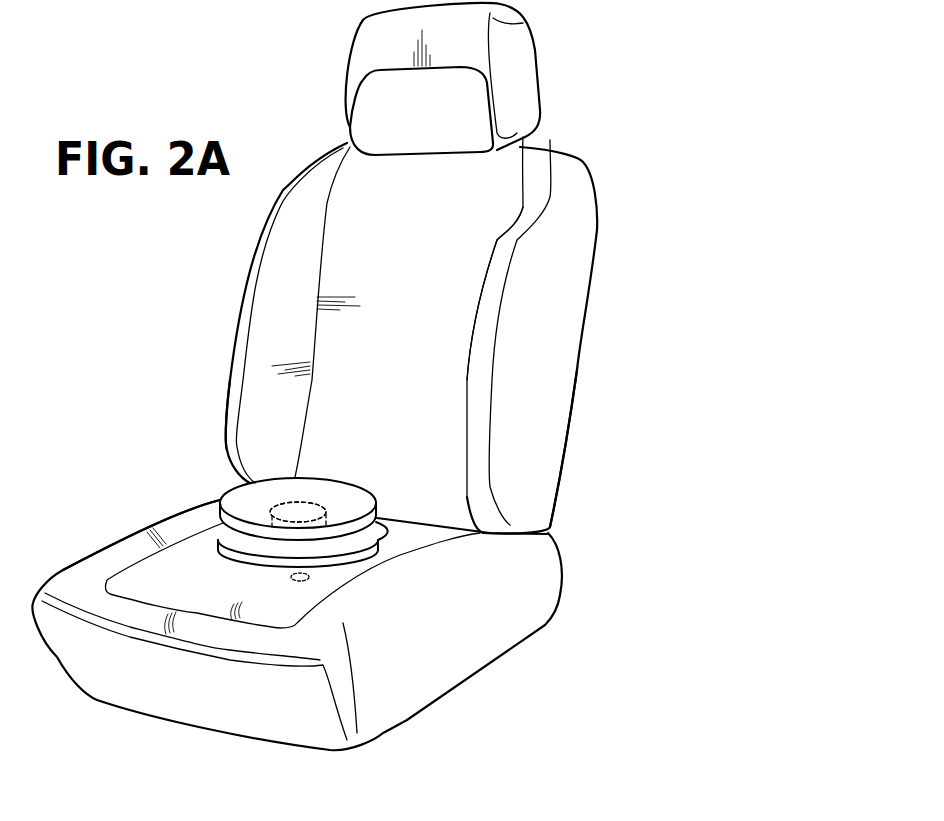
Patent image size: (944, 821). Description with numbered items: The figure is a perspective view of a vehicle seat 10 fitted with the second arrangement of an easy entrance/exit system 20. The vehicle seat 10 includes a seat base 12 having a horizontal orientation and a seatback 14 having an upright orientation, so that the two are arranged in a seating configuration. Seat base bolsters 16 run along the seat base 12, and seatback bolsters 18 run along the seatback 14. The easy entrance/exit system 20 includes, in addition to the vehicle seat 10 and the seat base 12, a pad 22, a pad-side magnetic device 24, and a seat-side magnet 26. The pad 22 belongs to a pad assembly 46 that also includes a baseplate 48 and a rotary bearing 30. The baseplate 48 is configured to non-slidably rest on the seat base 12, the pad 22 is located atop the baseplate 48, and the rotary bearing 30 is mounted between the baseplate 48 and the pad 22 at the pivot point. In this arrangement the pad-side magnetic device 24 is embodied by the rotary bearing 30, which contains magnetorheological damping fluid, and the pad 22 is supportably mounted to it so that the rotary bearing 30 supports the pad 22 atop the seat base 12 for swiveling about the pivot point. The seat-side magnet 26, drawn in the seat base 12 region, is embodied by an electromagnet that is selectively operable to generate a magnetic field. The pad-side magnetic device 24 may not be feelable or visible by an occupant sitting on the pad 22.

The vehicle seat 10 is at (583, 162).
The seat base 12 is at (407, 720).
The seatback 14 is at (572, 418).
The seat base bolsters 16 is at (453, 550).
The seatback bolsters 18 is at (513, 240).
The easy entrance/exit system 20 is at (188, 404).
The pad 22 is at (238, 508).
The pad-side magnetic device 24 is at (277, 503).
The seat-side magnet 26 is at (291, 578).
The rotary bearing 30 is at (298, 512).
The pad assembly 46 is at (345, 475).
The baseplate 48 is at (343, 560).